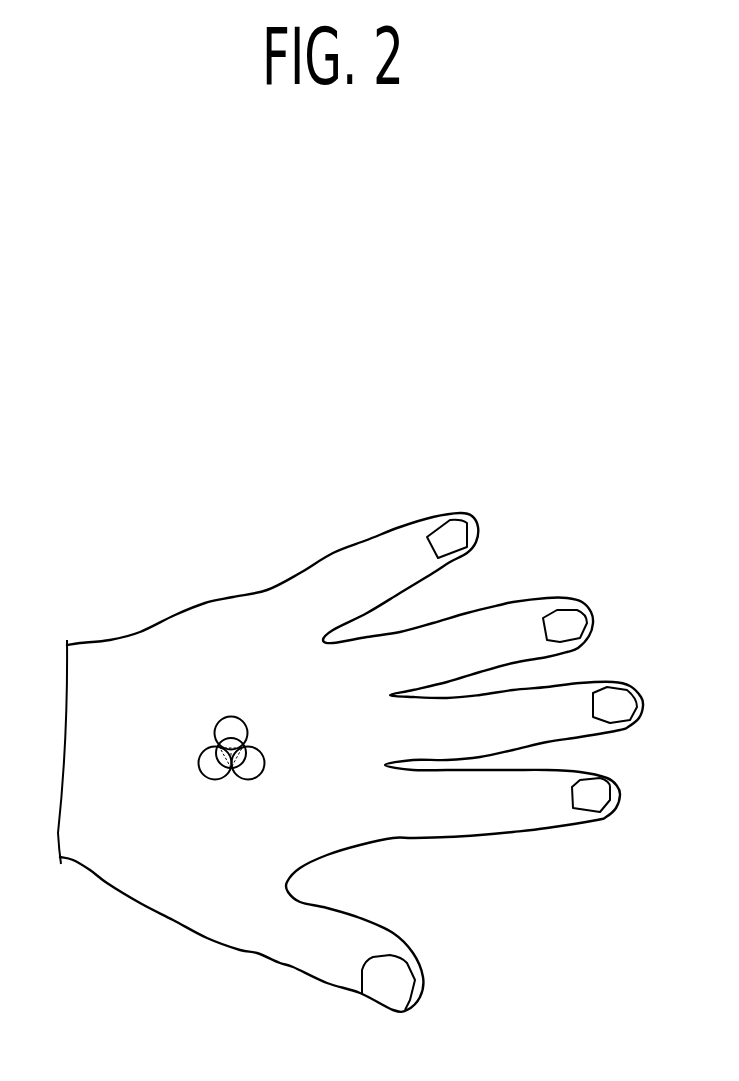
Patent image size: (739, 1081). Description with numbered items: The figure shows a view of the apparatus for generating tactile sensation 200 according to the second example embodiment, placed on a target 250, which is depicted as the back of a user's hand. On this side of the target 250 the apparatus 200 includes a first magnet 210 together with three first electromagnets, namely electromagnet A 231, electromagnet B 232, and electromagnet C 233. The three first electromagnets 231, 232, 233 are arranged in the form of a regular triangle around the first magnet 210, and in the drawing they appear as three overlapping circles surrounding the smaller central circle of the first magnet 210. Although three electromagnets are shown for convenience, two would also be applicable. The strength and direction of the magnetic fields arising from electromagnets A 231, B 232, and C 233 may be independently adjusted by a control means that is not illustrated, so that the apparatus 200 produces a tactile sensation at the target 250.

The apparatus for generating tactile sensation 200 is at (101, 436).
The target 250 is at (205, 602).
The first magnet 210 is at (250, 747).
The electromagnet A 231 is at (217, 728).
The electromagnet B 232 is at (205, 777).
The electromagnet C 233 is at (264, 752).